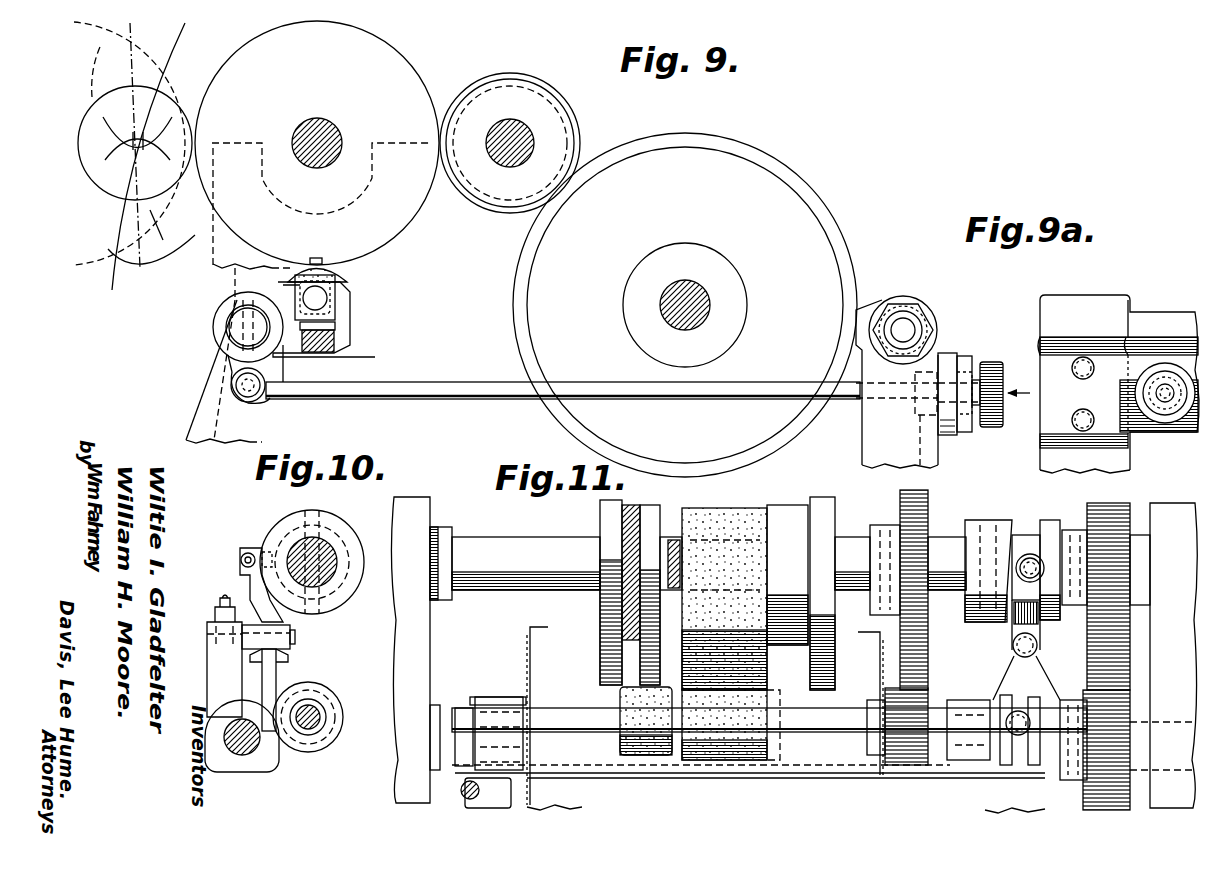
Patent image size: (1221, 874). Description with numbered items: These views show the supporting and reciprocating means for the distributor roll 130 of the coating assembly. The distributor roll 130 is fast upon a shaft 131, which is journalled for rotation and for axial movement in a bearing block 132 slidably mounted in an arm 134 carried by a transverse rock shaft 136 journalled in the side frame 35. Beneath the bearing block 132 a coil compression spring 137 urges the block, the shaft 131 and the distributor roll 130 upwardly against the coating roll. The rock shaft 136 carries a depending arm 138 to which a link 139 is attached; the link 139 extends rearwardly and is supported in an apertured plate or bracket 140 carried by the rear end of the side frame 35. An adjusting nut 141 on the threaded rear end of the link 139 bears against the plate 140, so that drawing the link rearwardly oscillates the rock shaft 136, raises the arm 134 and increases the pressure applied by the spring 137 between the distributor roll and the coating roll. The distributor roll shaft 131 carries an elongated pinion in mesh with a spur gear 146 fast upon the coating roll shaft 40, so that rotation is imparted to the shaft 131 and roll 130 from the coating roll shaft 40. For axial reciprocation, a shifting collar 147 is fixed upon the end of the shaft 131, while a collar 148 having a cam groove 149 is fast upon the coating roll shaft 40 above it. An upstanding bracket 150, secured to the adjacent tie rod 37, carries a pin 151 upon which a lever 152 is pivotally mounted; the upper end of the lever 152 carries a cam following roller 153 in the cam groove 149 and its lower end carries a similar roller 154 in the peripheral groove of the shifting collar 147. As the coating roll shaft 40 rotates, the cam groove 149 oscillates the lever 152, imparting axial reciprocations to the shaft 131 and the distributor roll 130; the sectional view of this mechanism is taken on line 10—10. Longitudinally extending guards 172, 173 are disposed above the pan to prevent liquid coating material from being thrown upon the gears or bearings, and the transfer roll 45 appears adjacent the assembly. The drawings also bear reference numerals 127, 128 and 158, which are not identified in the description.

In FIG. 9, the bearing block 132 is at (324, 275).
In FIG. 9, the arm 134 is at (350, 338).
In FIG. 9, the rock shaft 136 is at (236, 326).
In FIG. 9, the coil compression spring 137 is at (330, 350).
In FIG. 9, the depending arm 138 is at (226, 370).
In FIG. 9, the link 139 is at (475, 390).
In FIG. 9, the side frame member 35 is at (885, 450).
In FIG. 9, the apertured plate 140 is at (950, 435).
In FIG. 9A, the apertured plate 140 is at (1150, 423).
In FIG. 9, the adjusting nut 141 is at (995, 427).
In FIG. 10, the collar 148 is at (333, 528).
In FIG. 11, the collar 148 is at (972, 532).
In FIG. 10, the coating roll shaft 40 is at (330, 548).
In FIG. 11, the coating roll shaft 40 is at (945, 573).
In FIG. 10, the cam groove 149 is at (275, 540).
In FIG. 11, the cam groove 149 is at (1032, 555).
In FIG. 10, the cam following roller 153 is at (258, 545).
In FIG. 11, the cam following roller 153 is at (1018, 572).
In FIG. 10, the upstanding bracket 150 is at (215, 670).
In FIG. 10, the pin 151 is at (295, 638).
In FIG. 11, the pin 151 is at (1038, 645).
In FIG. 10, the lever 152 is at (276, 668).
In FIG. 11, the lever 152 is at (1010, 632).
In FIG. 10, the tie rod 37 is at (250, 757).
In FIG. 11, the tie rod 37 is at (1135, 725).
In FIG. 10, the shifting collar 147 is at (330, 722).
In FIG. 11, the shifting collar 147 is at (1040, 700).
In FIG. 10, the roller 154 is at (318, 705).
In FIG. 11, the roller 154 is at (1020, 730).
In FIG. 10, the distributor roll shaft 131 is at (314, 728).
In FIG. 11, the distributor roll shaft 131 is at (828, 722).
In FIG. 11, the gear 128 is at (603, 518).
In FIG. 11, the guard 173 is at (532, 678).
In FIG. 11, the drum 127 is at (825, 520).
In FIG. 11, the distributor roll 130 is at (758, 762).
In FIG. 11, the guard 172 is at (878, 668).
In FIG. 11, the spur gear 146 is at (928, 640).
In FIG. 11, the transfer roll 45 is at (928, 700).
In FIG. 11, the hub 158 is at (985, 755).
In FIG. 11, the section line 10 is at (1027, 560).